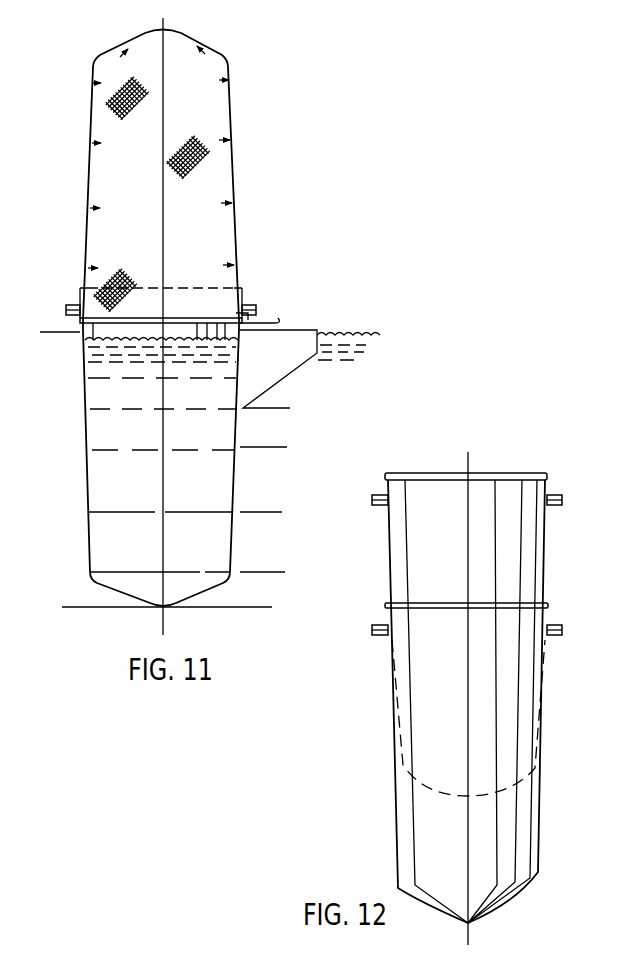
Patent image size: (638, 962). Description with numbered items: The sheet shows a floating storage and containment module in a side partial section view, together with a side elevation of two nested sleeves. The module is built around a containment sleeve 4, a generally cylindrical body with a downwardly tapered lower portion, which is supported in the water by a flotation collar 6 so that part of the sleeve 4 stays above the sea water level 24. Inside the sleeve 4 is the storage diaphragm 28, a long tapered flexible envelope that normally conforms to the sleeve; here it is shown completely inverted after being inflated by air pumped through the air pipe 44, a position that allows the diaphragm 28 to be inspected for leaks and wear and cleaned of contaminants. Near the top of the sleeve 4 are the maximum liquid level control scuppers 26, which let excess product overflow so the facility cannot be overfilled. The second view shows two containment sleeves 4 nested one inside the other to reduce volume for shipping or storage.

In FIG. 11, the storage diaphragm 28 is at (234, 151).
In FIG. 11, the containment sleeve 4 is at (80, 305).
In FIG. 12, the containment sleeve 4 is at (548, 582).
In FIG. 11, the maximum liquid level control scuppers 26 is at (242, 312).
In FIG. 11, the air pipe 44 is at (262, 320).
In FIG. 11, the flotation collar 6 is at (310, 327).
In FIG. 11, the sea water level 24 is at (358, 335).